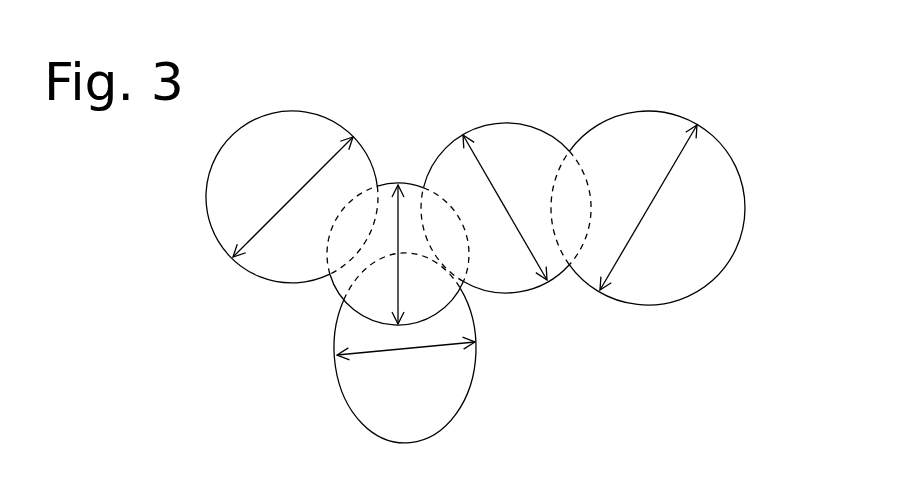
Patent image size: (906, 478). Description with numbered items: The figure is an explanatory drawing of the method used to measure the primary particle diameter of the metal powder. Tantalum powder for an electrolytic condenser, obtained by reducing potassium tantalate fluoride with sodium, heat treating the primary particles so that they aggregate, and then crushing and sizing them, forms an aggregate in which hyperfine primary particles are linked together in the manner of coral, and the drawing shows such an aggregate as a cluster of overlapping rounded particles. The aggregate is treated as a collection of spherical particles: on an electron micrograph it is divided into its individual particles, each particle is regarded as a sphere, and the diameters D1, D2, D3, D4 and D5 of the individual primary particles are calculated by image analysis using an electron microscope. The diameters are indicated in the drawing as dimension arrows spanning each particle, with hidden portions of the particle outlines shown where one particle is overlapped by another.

The diameter of primary particle D1 is at (293, 197).
The diameter of primary particle D2 is at (396, 254).
The diameter of primary particle D3 is at (406, 363).
The diameter of primary particle D4 is at (505, 207).
The diameter of fifth light source D5 is at (648, 207).